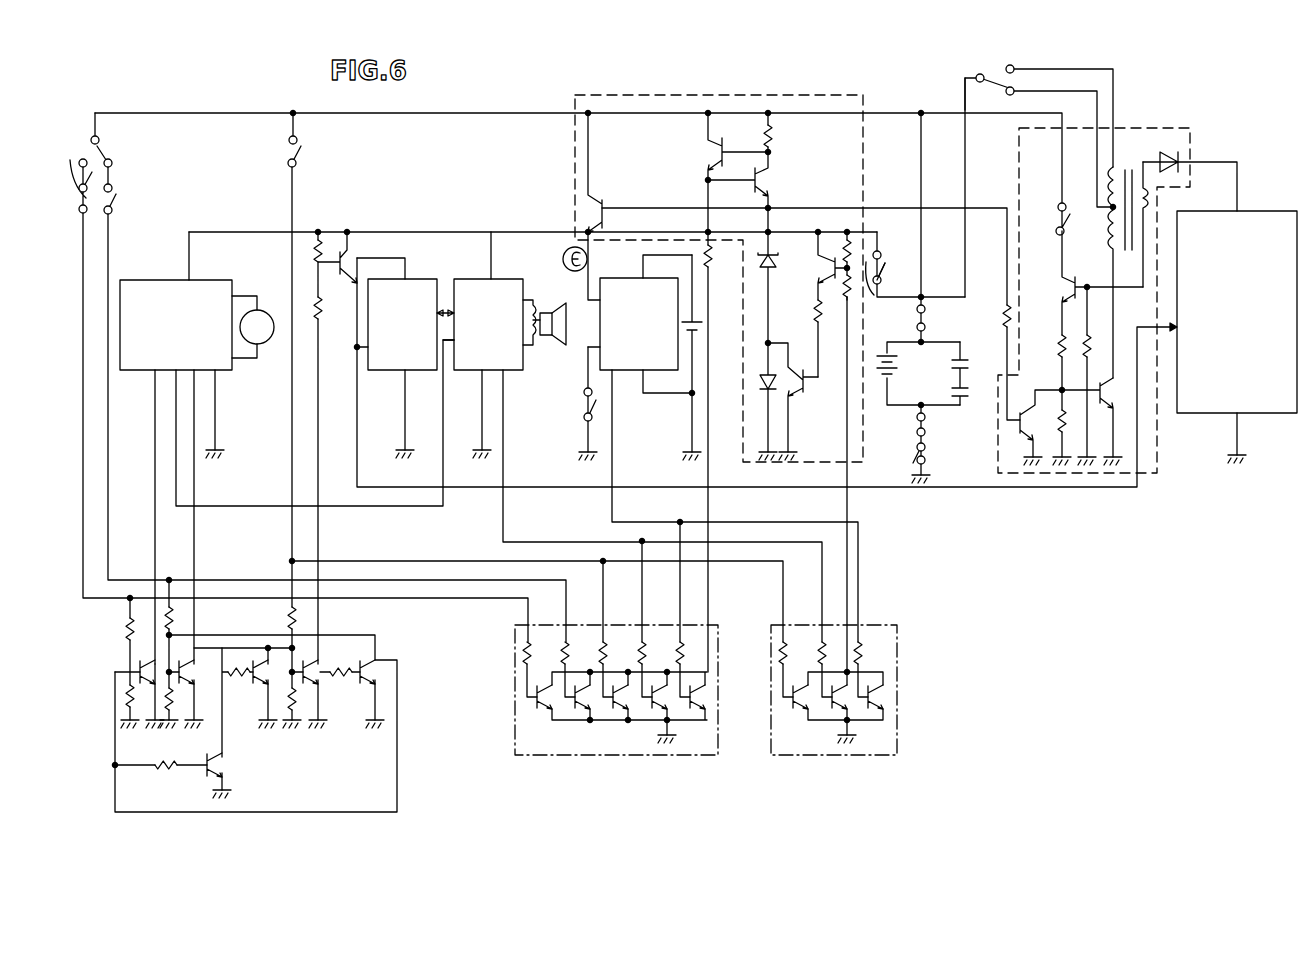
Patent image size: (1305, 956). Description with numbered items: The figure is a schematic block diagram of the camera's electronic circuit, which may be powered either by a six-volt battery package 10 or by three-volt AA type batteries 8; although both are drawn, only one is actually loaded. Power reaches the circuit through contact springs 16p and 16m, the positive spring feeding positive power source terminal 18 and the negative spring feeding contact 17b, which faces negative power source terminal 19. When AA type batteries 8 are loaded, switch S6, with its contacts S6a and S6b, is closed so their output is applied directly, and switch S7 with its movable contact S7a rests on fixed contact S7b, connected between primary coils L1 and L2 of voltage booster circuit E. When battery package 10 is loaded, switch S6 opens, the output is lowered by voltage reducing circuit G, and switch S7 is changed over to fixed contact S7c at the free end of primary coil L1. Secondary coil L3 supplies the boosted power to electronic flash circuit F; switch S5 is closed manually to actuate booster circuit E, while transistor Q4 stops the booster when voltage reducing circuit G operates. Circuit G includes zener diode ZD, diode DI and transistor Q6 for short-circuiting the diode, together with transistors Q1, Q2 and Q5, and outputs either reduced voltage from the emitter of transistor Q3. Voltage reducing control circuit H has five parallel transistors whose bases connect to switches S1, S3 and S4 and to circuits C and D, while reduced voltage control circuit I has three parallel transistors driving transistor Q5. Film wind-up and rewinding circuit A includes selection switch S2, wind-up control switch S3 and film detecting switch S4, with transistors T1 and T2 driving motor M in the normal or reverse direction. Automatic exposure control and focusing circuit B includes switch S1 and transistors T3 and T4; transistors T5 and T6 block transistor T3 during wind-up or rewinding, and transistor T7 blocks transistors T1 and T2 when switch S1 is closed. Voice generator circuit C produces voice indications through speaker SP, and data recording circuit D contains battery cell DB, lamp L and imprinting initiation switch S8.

The switch S1 is at (307, 141).
The switch S2 is at (110, 150).
The wind-up control switch S3 is at (74, 176).
The film detecting switch S4 is at (123, 200).
The switch S5 is at (1075, 220).
The switch S6 is at (919, 263).
The switch contact S6a is at (893, 276).
The switch contact S6b is at (880, 296).
The switch S7 is at (987, 170).
The switch contact S7a is at (965, 80).
The fixed contact S7b is at (1012, 92).
The fixed contact S7c is at (1010, 72).
The imprinting initiation switch S8 is at (583, 405).
The film wind-up and rewinding circuit A is at (221, 288).
The automatic exposure control and focusing circuit B is at (421, 285).
The voice generator circuit C is at (514, 284).
The data recording circuit D is at (620, 285).
The voltage booster circuit E is at (1178, 129).
The electronic flash circuit F is at (1207, 414).
The voltage reducing circuit G is at (772, 96).
The voltage reducing control circuit H is at (718, 634).
The reduced voltage control circuit I is at (897, 646).
The motor M is at (253, 327).
The lamp L is at (563, 260).
The primary coil L1 is at (1110, 166).
The primary coil L2 is at (1108, 244).
The secondary coil L3 is at (1150, 196).
The speaker SP is at (552, 338).
The battery cell DB is at (698, 328).
The zener diode ZD is at (790, 259).
The diode DI is at (788, 358).
The transistor Q1 is at (738, 172).
The transistor Q2 is at (739, 192).
The transistor Q3 is at (605, 172).
The transistor Q4 is at (1029, 427).
The transistor Q5 is at (828, 270).
The transistor Q6 is at (808, 386).
The transistor T1 is at (139, 661).
The transistor T2 is at (226, 652).
The transistor T3 is at (305, 643).
The transistor T4 is at (359, 448).
The transistor T5 is at (219, 768).
The transistor T6 is at (249, 701).
The transistor T7 is at (260, 723).
The AA type batteries 8 is at (904, 372).
The battery package 10 is at (968, 374).
The contact spring 16p is at (925, 325).
The contact spring 16m is at (925, 420).
The contact 17b is at (937, 463).
The positive power source terminal 18 is at (923, 297).
The negative power source terminal 19 is at (913, 461).